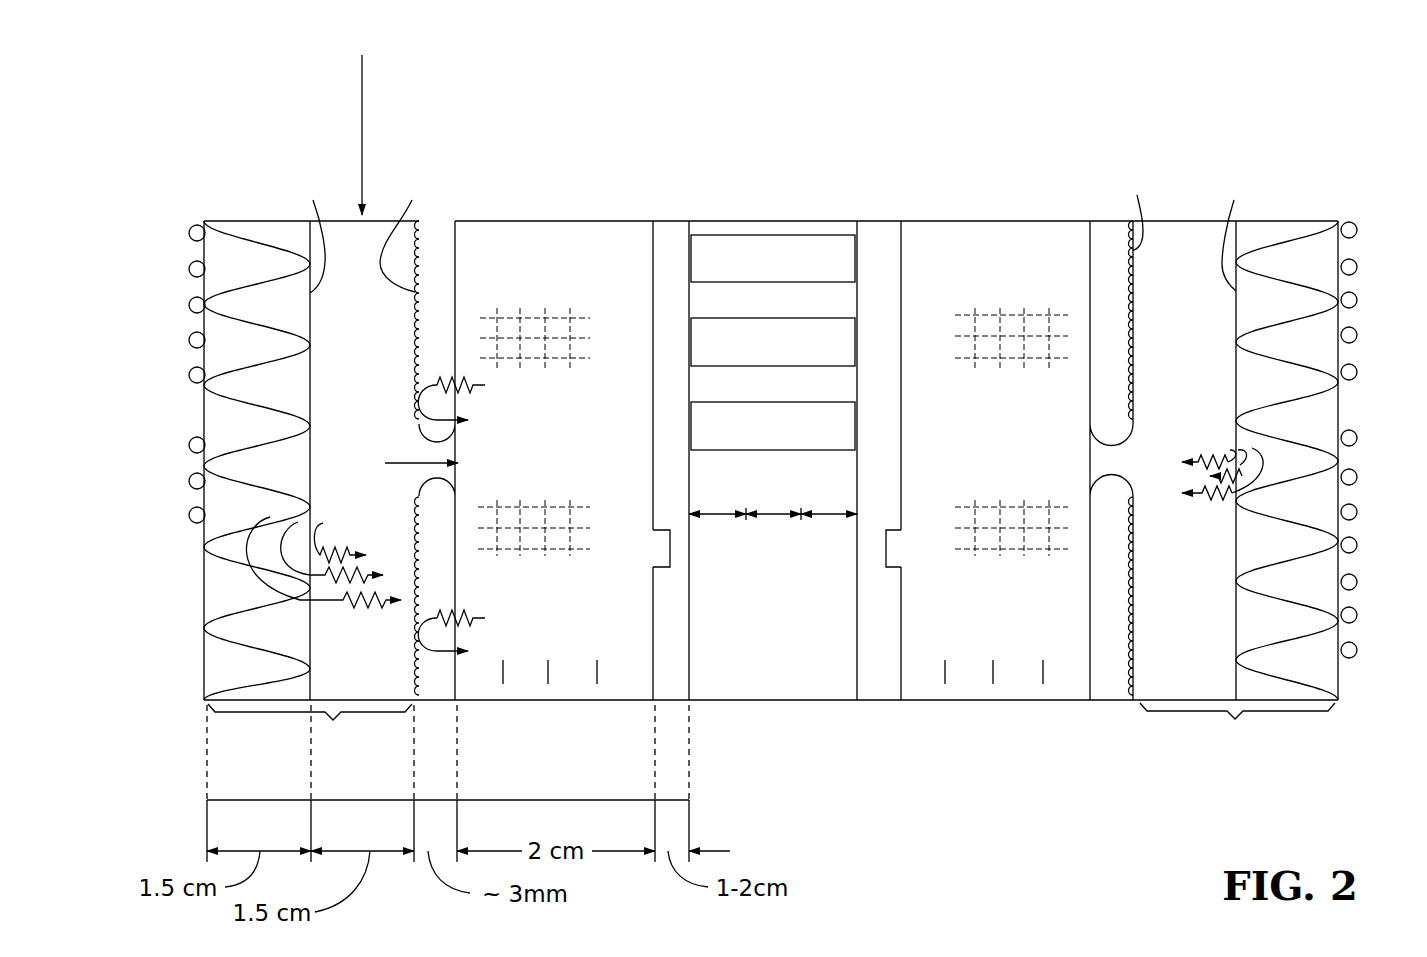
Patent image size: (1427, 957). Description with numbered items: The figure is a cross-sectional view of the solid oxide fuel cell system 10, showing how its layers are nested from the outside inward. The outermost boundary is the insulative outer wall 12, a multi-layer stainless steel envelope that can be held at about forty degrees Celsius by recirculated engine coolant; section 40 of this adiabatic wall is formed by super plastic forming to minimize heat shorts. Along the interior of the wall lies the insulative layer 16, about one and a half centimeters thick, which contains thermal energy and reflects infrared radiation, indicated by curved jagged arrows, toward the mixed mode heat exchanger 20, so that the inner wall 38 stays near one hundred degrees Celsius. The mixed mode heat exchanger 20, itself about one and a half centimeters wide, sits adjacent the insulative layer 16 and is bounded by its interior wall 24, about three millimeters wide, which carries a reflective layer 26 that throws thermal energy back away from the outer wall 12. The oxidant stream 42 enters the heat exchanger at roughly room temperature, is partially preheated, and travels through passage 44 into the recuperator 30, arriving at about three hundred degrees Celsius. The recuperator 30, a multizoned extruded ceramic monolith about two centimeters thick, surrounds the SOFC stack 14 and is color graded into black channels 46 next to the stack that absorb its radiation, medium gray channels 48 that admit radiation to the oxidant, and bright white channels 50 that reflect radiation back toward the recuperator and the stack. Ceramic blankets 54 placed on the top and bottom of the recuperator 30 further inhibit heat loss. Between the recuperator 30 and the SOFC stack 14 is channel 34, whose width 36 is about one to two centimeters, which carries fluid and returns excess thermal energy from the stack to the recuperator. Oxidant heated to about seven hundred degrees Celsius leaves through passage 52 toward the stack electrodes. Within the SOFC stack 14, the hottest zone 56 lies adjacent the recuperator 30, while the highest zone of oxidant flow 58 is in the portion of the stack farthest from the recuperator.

The system 10 is at (508, 188).
The insulative outer wall 12 is at (203, 405).
The SOFC stack 14 is at (775, 425).
The insulative layer 16 is at (230, 265).
The mixed mode heat exchanger 20 is at (350, 251).
The interior wall 24 is at (765, 230).
The reflective layer 26 is at (380, 238).
The recuperator 30 is at (541, 246).
The channel 34 is at (659, 492).
The width 36 is at (189, 448).
The inner wall 38 is at (771, 234).
The section 40 is at (771, 727).
The oxidant stream 42 is at (356, 136).
The passage 44 is at (1121, 470).
The black channels 46 is at (771, 672).
The medium gray channels 48 is at (770, 672).
The bright white channels 50 is at (773, 672).
The passage 52 is at (600, 568).
The ceramic blankets 54 is at (563, 520).
The hottest zone 56 is at (773, 502).
The highest zone of oxidant flow 58 is at (773, 499).